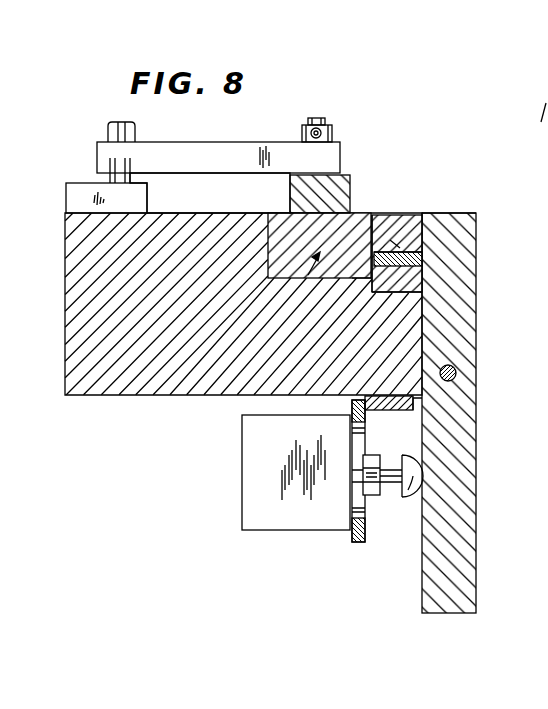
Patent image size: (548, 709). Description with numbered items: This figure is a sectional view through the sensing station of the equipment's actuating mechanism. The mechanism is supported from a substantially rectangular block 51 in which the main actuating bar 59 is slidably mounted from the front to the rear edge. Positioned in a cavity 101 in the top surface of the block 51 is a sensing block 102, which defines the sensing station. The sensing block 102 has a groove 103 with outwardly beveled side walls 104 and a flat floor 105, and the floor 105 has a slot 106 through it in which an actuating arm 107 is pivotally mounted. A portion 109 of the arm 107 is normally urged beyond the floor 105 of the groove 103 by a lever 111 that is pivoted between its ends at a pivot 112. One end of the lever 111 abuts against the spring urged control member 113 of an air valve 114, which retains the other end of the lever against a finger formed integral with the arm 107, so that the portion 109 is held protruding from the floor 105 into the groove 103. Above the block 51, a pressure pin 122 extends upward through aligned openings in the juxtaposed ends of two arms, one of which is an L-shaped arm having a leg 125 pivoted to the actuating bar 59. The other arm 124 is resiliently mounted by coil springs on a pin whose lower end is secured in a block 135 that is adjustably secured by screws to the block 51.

The block 51 is at (71, 232).
The main actuating bar 59 is at (313, 280).
The cavity 101 is at (373, 230).
The sensing block 102 is at (395, 240).
The groove 103 is at (387, 215).
The beveled side walls 104 is at (377, 293).
The floor 105 is at (400, 283).
The slot 106 is at (421, 223).
The actuating arm 107 is at (423, 258).
The portion of arm 109 is at (358, 278).
The lever 111 is at (466, 425).
The pivot 112 is at (457, 378).
The control member 113 is at (410, 487).
The air valve 114 is at (285, 530).
The pressure pin 122 is at (318, 118).
The arm 124 is at (218, 144).
The leg 125 is at (350, 178).
The block 135 is at (67, 183).